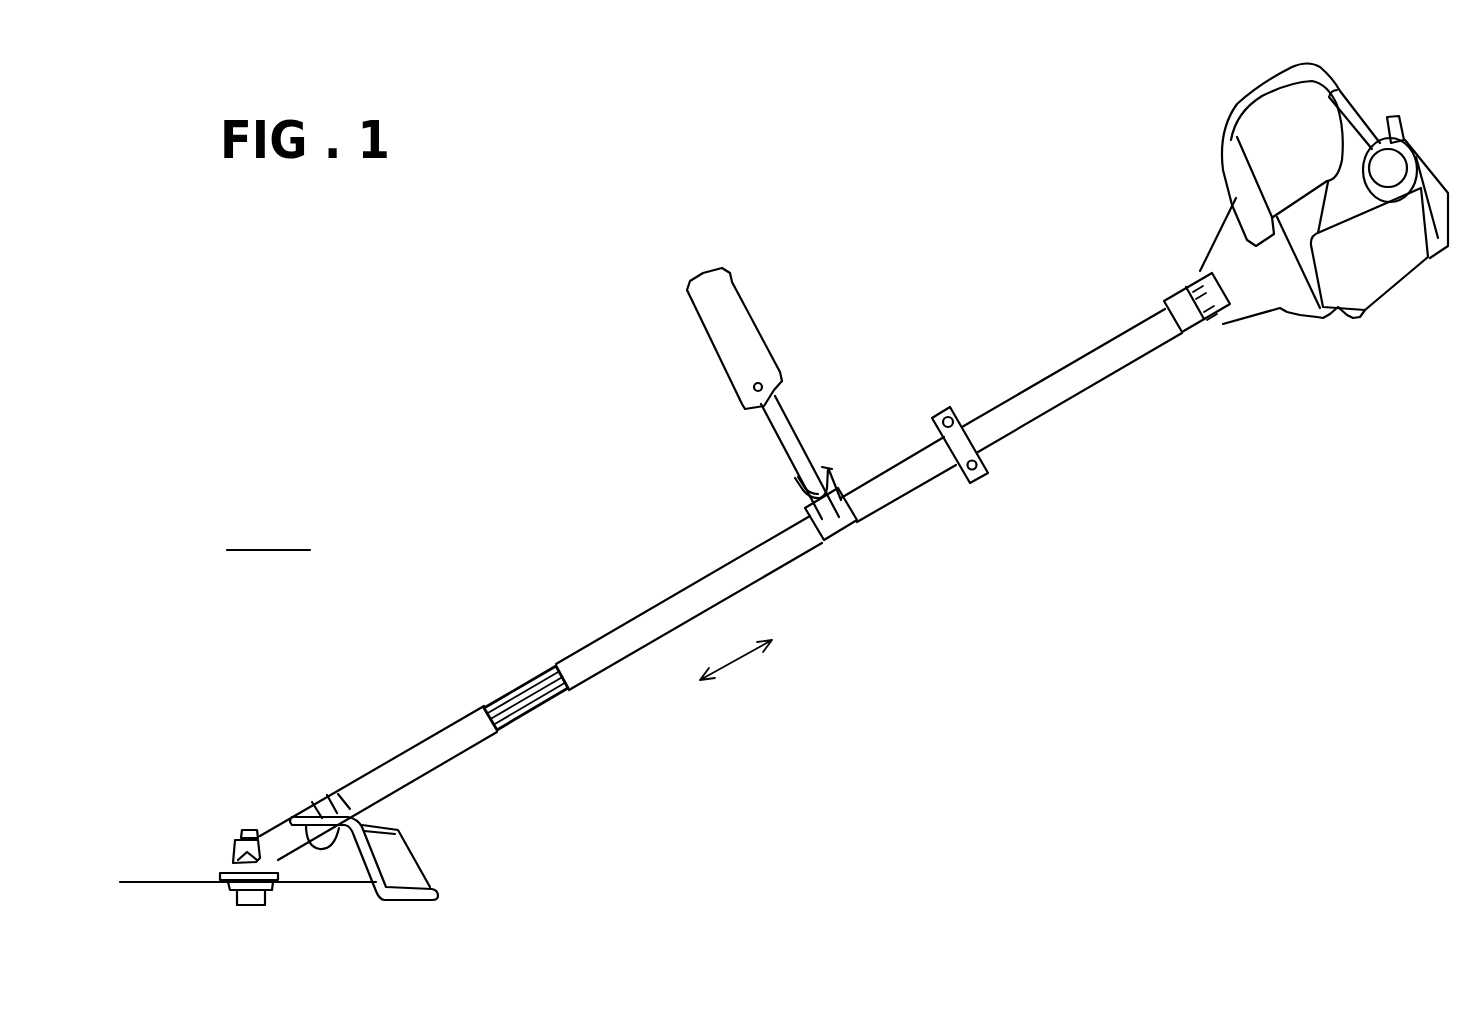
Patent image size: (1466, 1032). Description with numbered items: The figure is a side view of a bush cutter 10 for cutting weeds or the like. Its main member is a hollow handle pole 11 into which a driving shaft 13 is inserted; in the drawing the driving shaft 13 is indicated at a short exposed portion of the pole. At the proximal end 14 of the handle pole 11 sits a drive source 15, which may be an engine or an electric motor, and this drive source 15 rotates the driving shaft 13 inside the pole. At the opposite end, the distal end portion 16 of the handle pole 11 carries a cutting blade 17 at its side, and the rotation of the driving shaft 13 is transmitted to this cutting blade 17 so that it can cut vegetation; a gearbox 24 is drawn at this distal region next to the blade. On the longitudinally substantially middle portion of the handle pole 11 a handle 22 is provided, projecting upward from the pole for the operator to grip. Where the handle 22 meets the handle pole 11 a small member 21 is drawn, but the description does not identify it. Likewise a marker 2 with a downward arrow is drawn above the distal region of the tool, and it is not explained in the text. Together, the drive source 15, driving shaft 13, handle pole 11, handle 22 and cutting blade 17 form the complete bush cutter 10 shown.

The bush cutter 10 is at (645, 258).
The handle pole 11 is at (648, 625).
The driving shaft 13 is at (503, 712).
The proximal end 14 is at (1140, 322).
The drive source 15 is at (1250, 147).
The distal end portion 16 is at (352, 783).
The cutting blade 17 is at (178, 880).
The clamp 21 is at (812, 556).
The handle 22 is at (733, 313).
The gearbox 24 is at (268, 808).
The section line for FIG. 2 is at (270, 531).